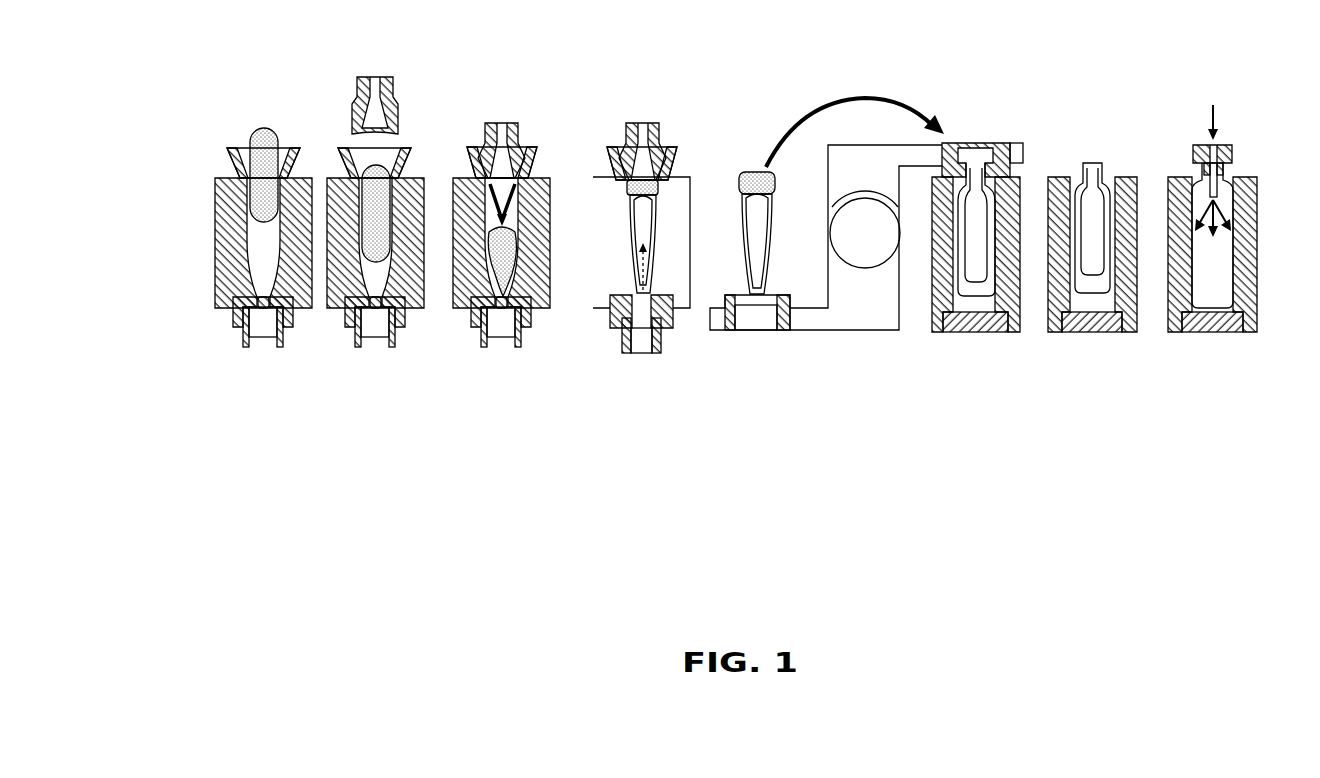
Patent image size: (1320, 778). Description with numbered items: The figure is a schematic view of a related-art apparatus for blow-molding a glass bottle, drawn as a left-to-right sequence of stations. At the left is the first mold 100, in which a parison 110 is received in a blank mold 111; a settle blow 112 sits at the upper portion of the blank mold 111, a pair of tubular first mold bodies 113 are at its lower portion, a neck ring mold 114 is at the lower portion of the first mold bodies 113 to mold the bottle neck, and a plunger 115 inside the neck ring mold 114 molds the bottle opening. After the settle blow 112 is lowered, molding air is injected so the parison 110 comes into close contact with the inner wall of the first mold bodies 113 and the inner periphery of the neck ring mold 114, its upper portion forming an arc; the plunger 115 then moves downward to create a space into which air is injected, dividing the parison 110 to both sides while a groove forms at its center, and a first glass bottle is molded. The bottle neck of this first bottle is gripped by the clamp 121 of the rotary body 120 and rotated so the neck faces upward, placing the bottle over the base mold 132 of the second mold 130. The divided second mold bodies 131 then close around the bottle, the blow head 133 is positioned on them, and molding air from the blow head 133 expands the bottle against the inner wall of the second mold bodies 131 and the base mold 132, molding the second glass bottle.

The first mold 100 is at (254, 112).
The parison 110 is at (270, 150).
The blank mold 111 is at (236, 158).
The settle blow 112 is at (393, 94).
The first mold bodies 113 is at (299, 262).
The neck ring mold 114 is at (250, 299).
The plunger 115 is at (258, 330).
The rotary body 120 is at (851, 245).
The clamp 121 is at (786, 318).
The second mold 130 is at (1101, 145).
The second mold bodies 131 is at (941, 290).
The base mold 132 is at (1100, 315).
The blow head 133 is at (1232, 153).